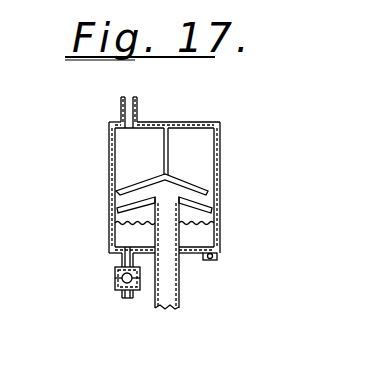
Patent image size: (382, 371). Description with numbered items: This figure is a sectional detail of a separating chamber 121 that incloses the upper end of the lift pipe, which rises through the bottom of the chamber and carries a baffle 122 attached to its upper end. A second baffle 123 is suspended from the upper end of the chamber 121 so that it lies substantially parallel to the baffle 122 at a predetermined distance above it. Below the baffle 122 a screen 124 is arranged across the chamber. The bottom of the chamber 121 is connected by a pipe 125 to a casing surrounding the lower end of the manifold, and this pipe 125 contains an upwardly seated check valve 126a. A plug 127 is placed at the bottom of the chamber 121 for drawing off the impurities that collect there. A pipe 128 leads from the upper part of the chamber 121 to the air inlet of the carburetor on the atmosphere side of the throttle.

The chamber 121 is at (221, 143).
The baffle 122 is at (200, 200).
The second baffle 123 is at (148, 184).
The screen 124 is at (216, 222).
The pipe 125 is at (122, 296).
The check valve 126a is at (115, 272).
The plug 127 is at (216, 262).
The pipe 128 is at (121, 107).